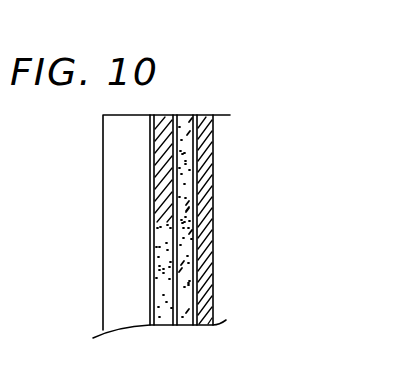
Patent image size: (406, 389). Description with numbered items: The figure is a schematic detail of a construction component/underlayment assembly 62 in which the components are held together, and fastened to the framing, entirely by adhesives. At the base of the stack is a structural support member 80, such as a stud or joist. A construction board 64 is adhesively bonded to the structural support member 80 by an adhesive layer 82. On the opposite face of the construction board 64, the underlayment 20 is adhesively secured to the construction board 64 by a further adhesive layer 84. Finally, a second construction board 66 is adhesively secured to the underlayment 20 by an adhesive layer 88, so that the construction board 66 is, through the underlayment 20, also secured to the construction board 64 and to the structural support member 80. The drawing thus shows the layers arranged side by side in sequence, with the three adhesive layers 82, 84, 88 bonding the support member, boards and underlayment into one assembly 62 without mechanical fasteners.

The construction component/underlayment assembly 62 is at (187, 243).
The structural support member 80 is at (117, 205).
The adhesive layer 82 is at (150, 233).
The construction board 64 is at (162, 172).
The adhesive layer 84 is at (175, 147).
The underlayment 20 is at (187, 243).
The adhesive layer 88 is at (196, 195).
The construction board 66 is at (206, 284).